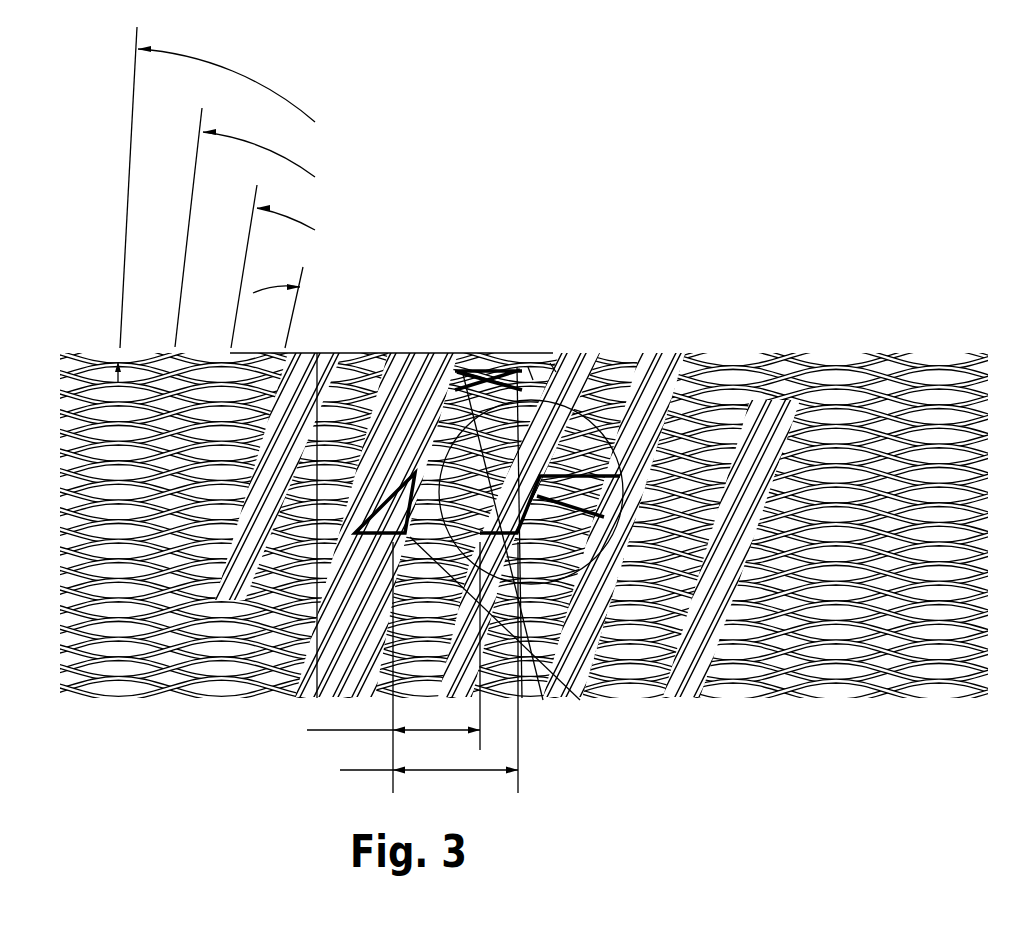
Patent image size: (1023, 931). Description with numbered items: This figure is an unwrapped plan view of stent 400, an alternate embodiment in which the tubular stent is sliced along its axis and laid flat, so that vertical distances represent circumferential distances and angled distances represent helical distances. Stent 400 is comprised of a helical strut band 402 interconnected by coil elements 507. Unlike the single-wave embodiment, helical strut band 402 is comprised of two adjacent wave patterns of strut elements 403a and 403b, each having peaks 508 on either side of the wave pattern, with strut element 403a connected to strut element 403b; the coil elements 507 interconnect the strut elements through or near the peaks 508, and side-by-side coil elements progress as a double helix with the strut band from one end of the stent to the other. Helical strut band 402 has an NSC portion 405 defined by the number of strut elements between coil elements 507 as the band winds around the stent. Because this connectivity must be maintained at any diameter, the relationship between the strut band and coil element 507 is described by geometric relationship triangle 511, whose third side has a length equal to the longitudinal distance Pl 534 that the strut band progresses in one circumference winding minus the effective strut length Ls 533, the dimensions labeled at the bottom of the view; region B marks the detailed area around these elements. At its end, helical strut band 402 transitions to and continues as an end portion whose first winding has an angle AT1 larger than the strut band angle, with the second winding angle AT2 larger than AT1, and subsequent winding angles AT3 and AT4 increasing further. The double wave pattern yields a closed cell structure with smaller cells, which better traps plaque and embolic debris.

The stent 400 is at (680, 346).
The helical strut band 402 is at (493, 346).
The strut element 403a is at (462, 370).
The strut element 403b is at (517, 367).
The NSC portion 405 is at (475, 347).
The coil element 507 is at (550, 363).
The peak 508 is at (528, 367).
The geometric relationship triangle 511 is at (542, 693).
The effective strut length 533 is at (260, 740).
The longitudinal distance 534 is at (287, 773).
The detail region B is at (603, 427).
The angle of the first winding AT1 is at (340, 387).
The angle of the second winding AT2 is at (376, 351).
The angle of the third winding AT3 is at (395, 351).
The angle of the fourth winding AT4 is at (420, 351).
The effective strut length Ls is at (373, 667).
The longitudinal distance Pl is at (411, 667).